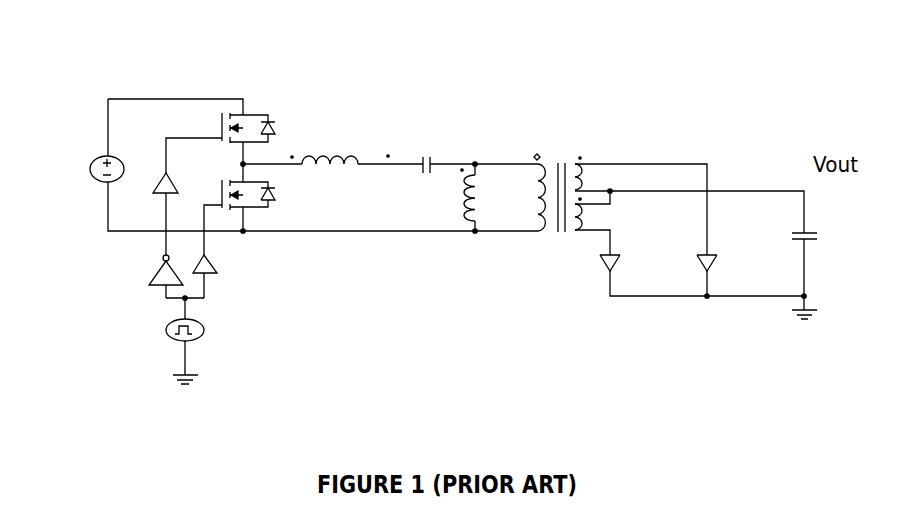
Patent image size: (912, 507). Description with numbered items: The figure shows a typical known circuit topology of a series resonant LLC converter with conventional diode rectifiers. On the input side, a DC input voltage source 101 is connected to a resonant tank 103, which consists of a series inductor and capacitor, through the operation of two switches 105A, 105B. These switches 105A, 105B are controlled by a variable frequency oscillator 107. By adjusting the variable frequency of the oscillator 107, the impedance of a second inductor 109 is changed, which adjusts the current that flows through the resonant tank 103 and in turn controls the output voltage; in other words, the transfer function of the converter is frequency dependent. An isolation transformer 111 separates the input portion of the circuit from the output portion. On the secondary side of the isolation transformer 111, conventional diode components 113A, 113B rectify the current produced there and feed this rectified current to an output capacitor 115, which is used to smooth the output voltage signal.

The DC input voltage source 101 is at (74, 119).
The resonant tank 103 is at (421, 180).
The switch 105A is at (262, 93).
The switch 105B is at (272, 246).
The variable frequency oscillator 107 is at (128, 360).
The second inductor 109 is at (486, 234).
The isolation transformer 111 is at (589, 147).
The diode component 113A is at (562, 309).
The diode component 113B is at (654, 308).
The output capacitor 115 is at (765, 290).